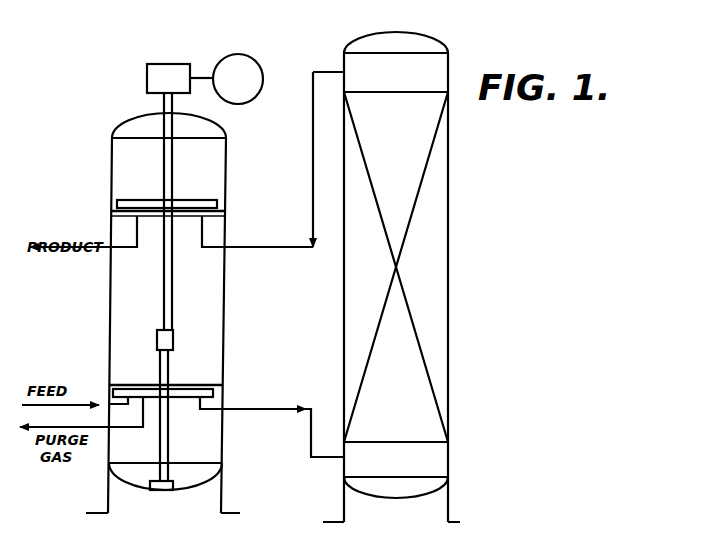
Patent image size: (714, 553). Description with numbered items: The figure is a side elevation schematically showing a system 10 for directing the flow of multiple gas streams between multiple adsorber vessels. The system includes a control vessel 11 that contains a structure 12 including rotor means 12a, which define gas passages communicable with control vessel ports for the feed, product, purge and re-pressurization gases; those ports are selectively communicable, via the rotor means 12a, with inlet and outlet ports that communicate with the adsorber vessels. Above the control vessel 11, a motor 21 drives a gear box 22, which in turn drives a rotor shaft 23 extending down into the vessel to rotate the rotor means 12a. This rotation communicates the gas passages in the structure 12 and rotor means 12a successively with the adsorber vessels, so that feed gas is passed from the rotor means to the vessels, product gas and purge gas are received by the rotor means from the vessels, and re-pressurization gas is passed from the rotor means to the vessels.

The system 10 is at (136, 303).
The control vessel 11 is at (111, 312).
The structure 12 is at (185, 407).
The rotor means 12a is at (198, 195).
The motor 21 is at (250, 56).
The gear box 22 is at (161, 72).
The rotor shaft 23 is at (172, 301).